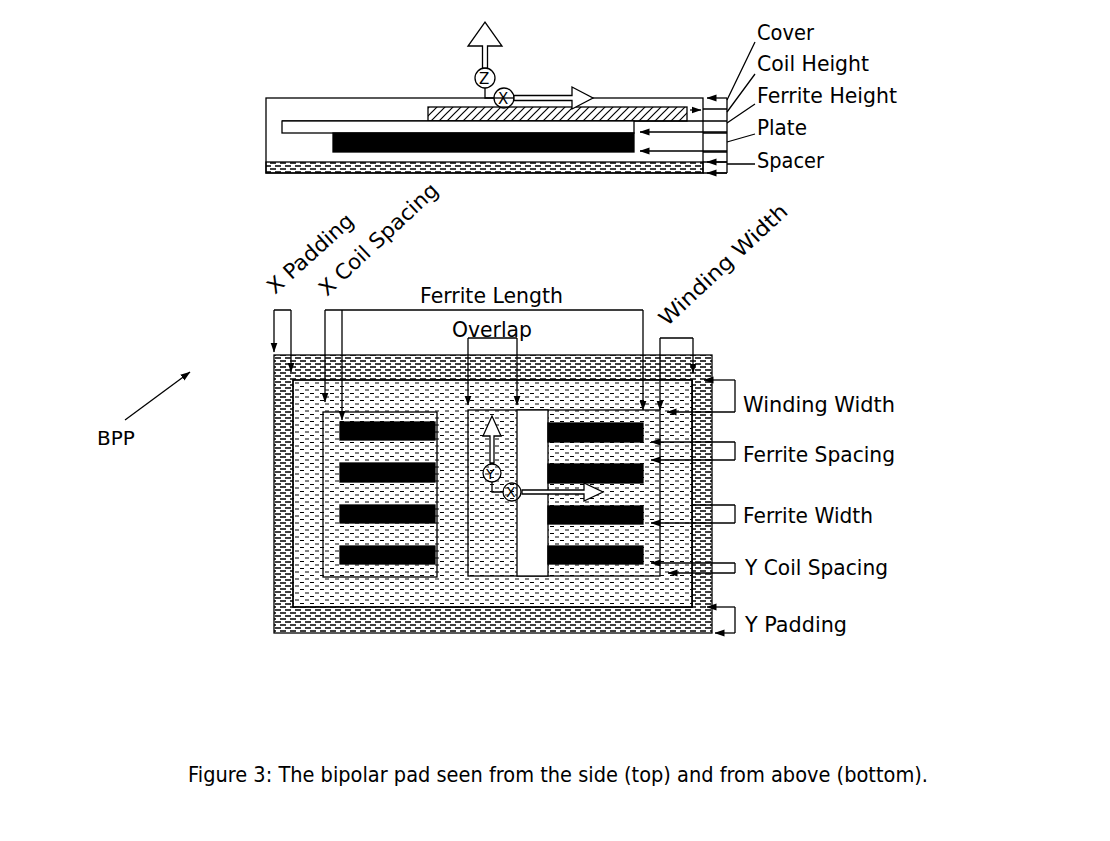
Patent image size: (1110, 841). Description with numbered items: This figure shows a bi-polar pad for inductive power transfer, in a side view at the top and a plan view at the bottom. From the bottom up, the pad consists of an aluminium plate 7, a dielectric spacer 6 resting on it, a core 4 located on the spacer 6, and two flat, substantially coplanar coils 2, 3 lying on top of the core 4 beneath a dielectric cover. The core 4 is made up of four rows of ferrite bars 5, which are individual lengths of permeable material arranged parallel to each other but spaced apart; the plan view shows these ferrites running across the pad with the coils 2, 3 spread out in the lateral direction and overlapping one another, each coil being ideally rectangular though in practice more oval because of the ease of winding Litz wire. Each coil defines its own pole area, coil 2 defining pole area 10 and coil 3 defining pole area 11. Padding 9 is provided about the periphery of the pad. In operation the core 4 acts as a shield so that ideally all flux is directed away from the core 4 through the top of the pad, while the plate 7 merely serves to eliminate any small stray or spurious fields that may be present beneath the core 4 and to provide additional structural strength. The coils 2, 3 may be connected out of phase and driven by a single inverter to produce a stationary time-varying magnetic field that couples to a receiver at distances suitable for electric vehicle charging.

The coil 2 is at (310, 128).
The coil 3 is at (638, 110).
The core 4 is at (500, 152).
The ferrite bars 5 is at (347, 435).
The dielectric spacer 6 is at (573, 155).
The aluminium plate 7 is at (630, 168).
The padding 9 is at (325, 615).
The pole area 10 is at (352, 532).
The pole area 11 is at (637, 537).